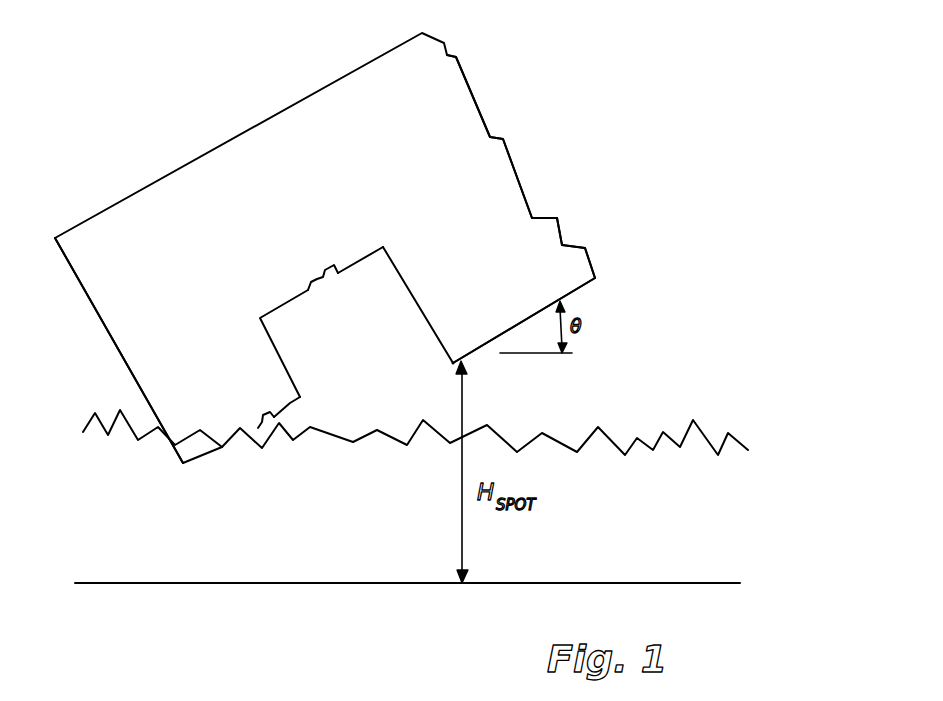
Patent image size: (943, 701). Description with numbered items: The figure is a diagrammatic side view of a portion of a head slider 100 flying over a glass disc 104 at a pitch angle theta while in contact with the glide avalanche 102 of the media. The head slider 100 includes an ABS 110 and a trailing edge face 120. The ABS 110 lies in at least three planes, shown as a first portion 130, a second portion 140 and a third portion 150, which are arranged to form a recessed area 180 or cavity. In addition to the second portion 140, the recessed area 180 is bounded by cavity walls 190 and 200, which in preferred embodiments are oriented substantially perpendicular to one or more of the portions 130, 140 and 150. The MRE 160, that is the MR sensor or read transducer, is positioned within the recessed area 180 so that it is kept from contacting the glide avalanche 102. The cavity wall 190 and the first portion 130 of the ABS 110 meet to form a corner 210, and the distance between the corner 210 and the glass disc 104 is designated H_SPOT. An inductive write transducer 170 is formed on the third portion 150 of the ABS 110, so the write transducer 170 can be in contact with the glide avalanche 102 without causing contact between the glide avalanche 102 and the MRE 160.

The head slider 100 is at (387, 52).
The glide avalanche 102 is at (700, 420).
The glass disc 104 is at (628, 582).
The ABS 110 is at (630, 220).
The trailing edge face 120 is at (103, 323).
The first portion 130 is at (597, 279).
The second portion 140 is at (357, 262).
The third portion 150 is at (291, 402).
The MRE 160 is at (324, 284).
The inductive write transducer 170 is at (263, 413).
The recessed area 180 is at (380, 350).
The cavity wall 190 is at (403, 280).
The cavity wall 200 is at (269, 334).
The corner 210 is at (453, 360).